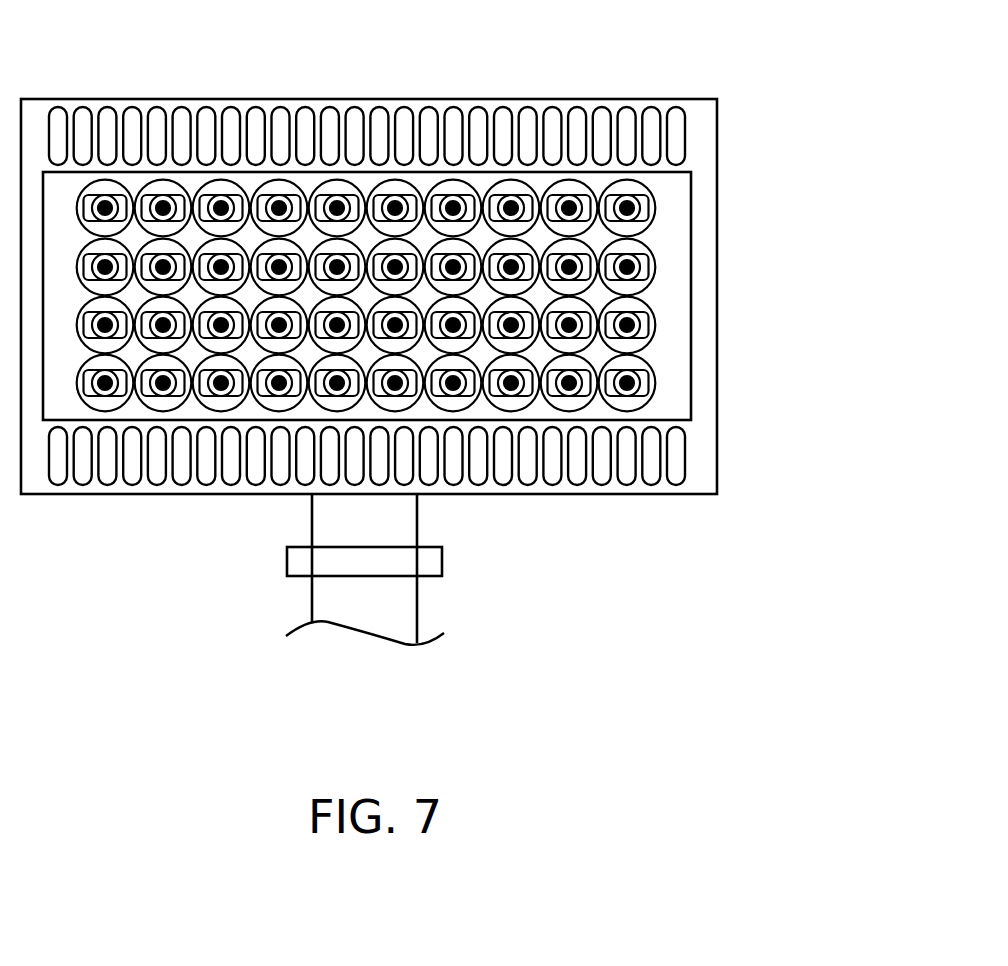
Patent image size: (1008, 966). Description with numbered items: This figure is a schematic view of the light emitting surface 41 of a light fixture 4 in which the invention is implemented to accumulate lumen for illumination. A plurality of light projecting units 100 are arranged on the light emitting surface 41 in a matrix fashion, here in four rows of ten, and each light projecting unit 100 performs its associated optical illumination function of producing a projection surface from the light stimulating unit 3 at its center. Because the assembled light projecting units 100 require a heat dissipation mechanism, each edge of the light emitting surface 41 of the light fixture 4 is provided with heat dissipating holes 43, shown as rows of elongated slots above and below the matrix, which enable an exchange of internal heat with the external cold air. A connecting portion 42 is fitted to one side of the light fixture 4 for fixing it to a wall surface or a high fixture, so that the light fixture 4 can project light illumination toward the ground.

The light stimulating unit 3 is at (627, 208).
The light projecting unit 100 is at (435, 220).
The light fixture 4 is at (424, 351).
The light emitting surface 41 is at (419, 339).
The connecting portion 42 is at (267, 603).
The heat dissipating holes 43 is at (675, 462).